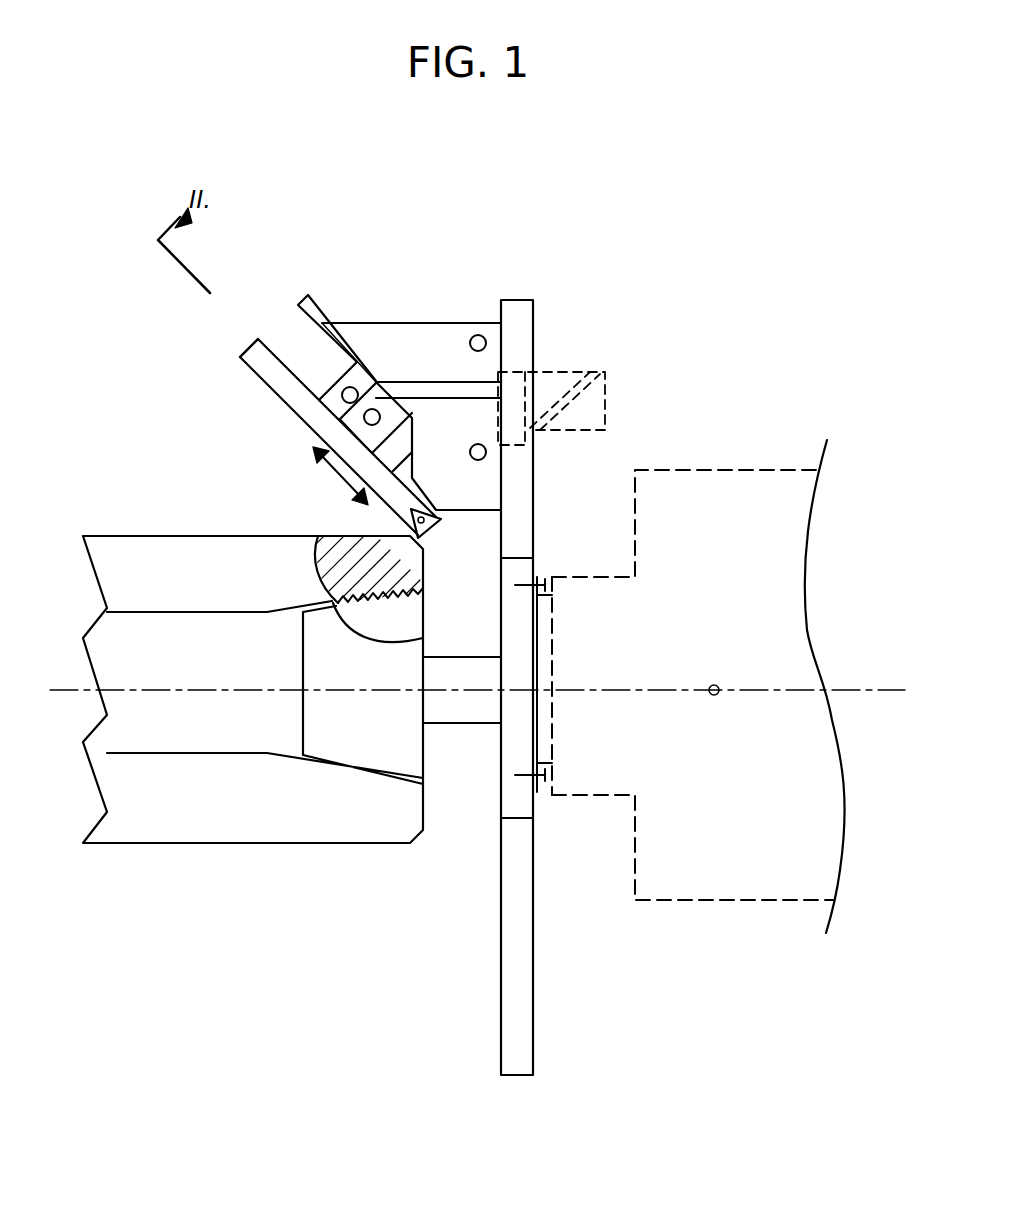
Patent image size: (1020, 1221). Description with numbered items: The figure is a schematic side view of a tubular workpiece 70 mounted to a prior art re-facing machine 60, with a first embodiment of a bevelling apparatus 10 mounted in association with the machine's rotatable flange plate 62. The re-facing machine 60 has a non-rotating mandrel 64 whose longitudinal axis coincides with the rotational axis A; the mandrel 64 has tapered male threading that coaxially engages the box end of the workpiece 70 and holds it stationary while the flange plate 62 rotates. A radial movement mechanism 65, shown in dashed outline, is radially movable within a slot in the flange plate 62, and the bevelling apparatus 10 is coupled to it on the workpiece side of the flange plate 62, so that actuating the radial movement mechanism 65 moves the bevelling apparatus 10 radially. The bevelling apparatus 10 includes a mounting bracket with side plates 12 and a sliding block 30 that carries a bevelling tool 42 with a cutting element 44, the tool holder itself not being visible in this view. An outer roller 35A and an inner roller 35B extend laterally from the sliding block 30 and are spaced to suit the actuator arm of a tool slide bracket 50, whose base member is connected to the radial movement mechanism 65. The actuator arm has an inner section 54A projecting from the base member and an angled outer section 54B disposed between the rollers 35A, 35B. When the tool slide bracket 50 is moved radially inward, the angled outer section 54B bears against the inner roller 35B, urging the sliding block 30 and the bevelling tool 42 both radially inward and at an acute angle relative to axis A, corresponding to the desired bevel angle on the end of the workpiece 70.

The bevelling apparatus 10 is at (357, 285).
The side plate 12 is at (453, 328).
The sliding block 30 is at (335, 401).
The outer roller 35A is at (343, 390).
The inner roller 35B is at (381, 418).
The bevelling tool 42 is at (262, 380).
The cutting element 44 is at (427, 530).
The tool slide bracket 50 is at (518, 360).
The inner section of actuator arm 54A is at (427, 385).
The outer section of actuator arm 54B is at (330, 412).
The re-facing machine 60 is at (730, 517).
The flange plate 62 is at (533, 968).
The mandrel 64 is at (396, 617).
The radial movement mechanism 65 is at (588, 363).
The tubular workpiece 70 is at (185, 845).
The rotational axis A is at (714, 684).